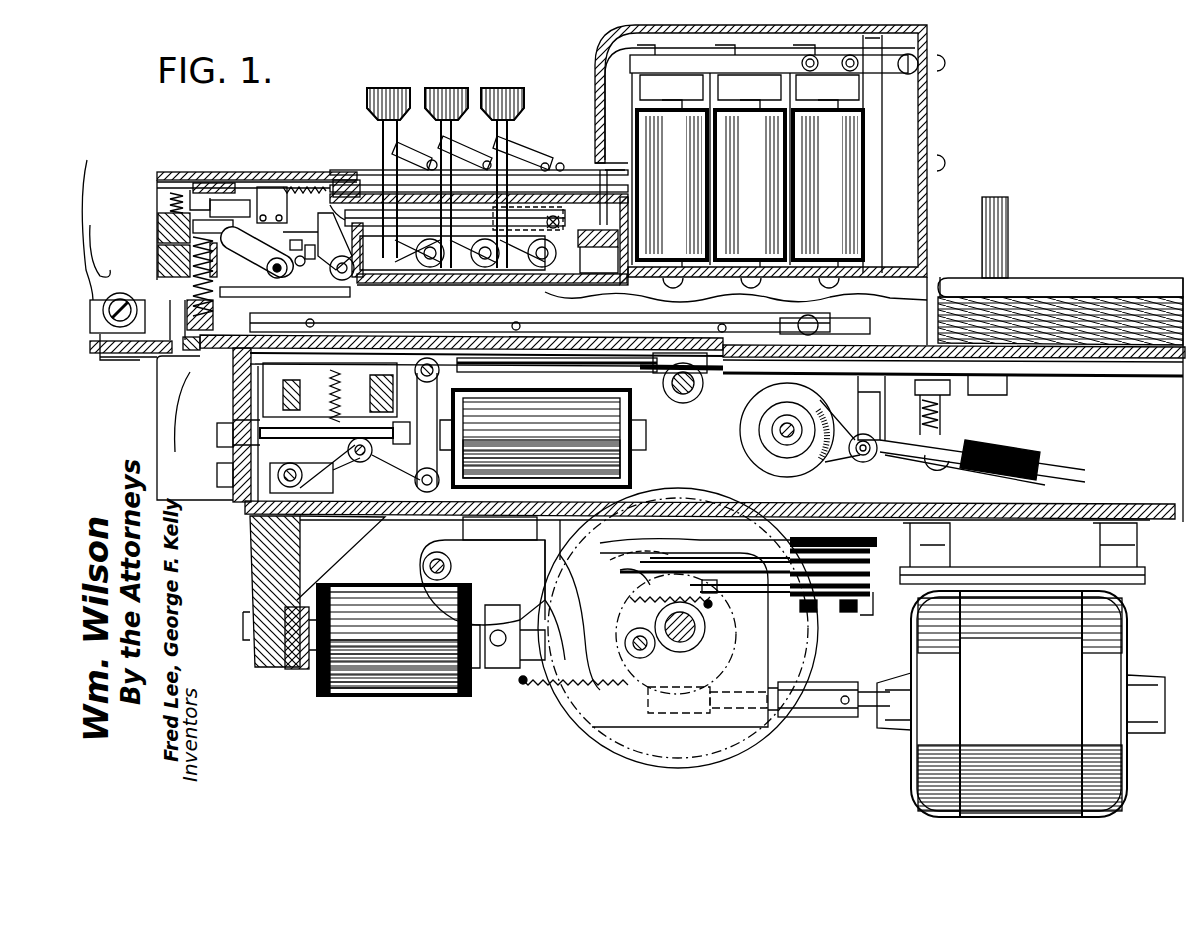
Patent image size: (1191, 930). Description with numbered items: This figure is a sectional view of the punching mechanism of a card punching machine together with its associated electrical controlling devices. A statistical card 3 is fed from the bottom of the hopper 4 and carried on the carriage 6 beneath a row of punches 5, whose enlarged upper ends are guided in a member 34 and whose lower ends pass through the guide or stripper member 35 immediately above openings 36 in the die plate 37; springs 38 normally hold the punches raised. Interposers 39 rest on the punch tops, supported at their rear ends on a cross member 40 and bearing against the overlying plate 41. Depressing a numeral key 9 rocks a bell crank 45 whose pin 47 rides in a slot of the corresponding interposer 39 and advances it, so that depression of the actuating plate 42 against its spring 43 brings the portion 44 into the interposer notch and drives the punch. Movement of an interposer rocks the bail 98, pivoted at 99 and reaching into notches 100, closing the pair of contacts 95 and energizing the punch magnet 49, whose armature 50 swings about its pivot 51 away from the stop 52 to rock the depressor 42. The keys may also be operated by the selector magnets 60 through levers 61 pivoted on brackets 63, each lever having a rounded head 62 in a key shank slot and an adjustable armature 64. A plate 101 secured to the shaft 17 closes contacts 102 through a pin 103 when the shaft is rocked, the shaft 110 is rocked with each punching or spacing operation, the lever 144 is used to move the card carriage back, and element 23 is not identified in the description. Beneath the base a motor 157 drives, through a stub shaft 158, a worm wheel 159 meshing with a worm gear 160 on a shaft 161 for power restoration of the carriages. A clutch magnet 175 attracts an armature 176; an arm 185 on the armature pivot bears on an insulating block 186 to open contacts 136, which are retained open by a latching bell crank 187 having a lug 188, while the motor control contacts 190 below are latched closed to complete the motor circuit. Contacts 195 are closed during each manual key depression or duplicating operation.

The statistical card 3 is at (1072, 305).
The hopper 4 is at (1025, 290).
The punches 5 is at (180, 352).
The carriage 6 is at (128, 355).
The numeral keys 9 is at (490, 88).
The shaft 17 is at (775, 432).
The shaft bearing 23 is at (703, 388).
The guide member 34 is at (158, 240).
The stripper member 35 is at (213, 323).
The openings 36 is at (185, 415).
The die plate 37 is at (200, 352).
The springs 38 is at (240, 276).
The interposers 39 is at (337, 246).
The cross member 40 is at (598, 251).
The overlying plate 41 is at (548, 215).
The actuating plate 42 is at (230, 183).
The spring 43 is at (170, 196).
The portion of depressor plate 44 is at (190, 192).
The bell crank 45 is at (488, 294).
The pin 47 is at (546, 222).
The punch magnet 49 is at (543, 438).
The armature 50 is at (395, 468).
The pivot 51 is at (462, 360).
The abutment or stop 52 is at (390, 428).
The selector magnets 60 is at (747, 180).
The levers 61 is at (610, 85).
The rounded heads 62 is at (500, 147).
The brackets 63 is at (905, 92).
The armature 64 is at (860, 100).
The pair of contacts 95 is at (330, 392).
The bail or universal member 98 is at (540, 325).
The pivot 99 is at (285, 298).
The notches 100 is at (330, 205).
The plate 101 is at (838, 415).
The pair of contacts 102 is at (905, 440).
The pin 103 is at (860, 462).
The shaft 110 is at (285, 188).
The set of contacts 136 is at (735, 560).
The lever 144 is at (109, 232).
The motor 157 is at (1021, 670).
The stub shaft 158 is at (823, 718).
The worm wheel 159 is at (685, 712).
The worm gear 160 is at (735, 653).
The shaft 161 is at (700, 628).
The magnet 175 is at (360, 595).
The armature 176 is at (500, 660).
The arm 185 is at (485, 552).
The insulating block 186 is at (670, 560).
The latching bell crank 187 is at (620, 650).
The lug 188 is at (580, 660).
The motor control contacts 190 is at (705, 583).
The contacts 195 is at (260, 420).